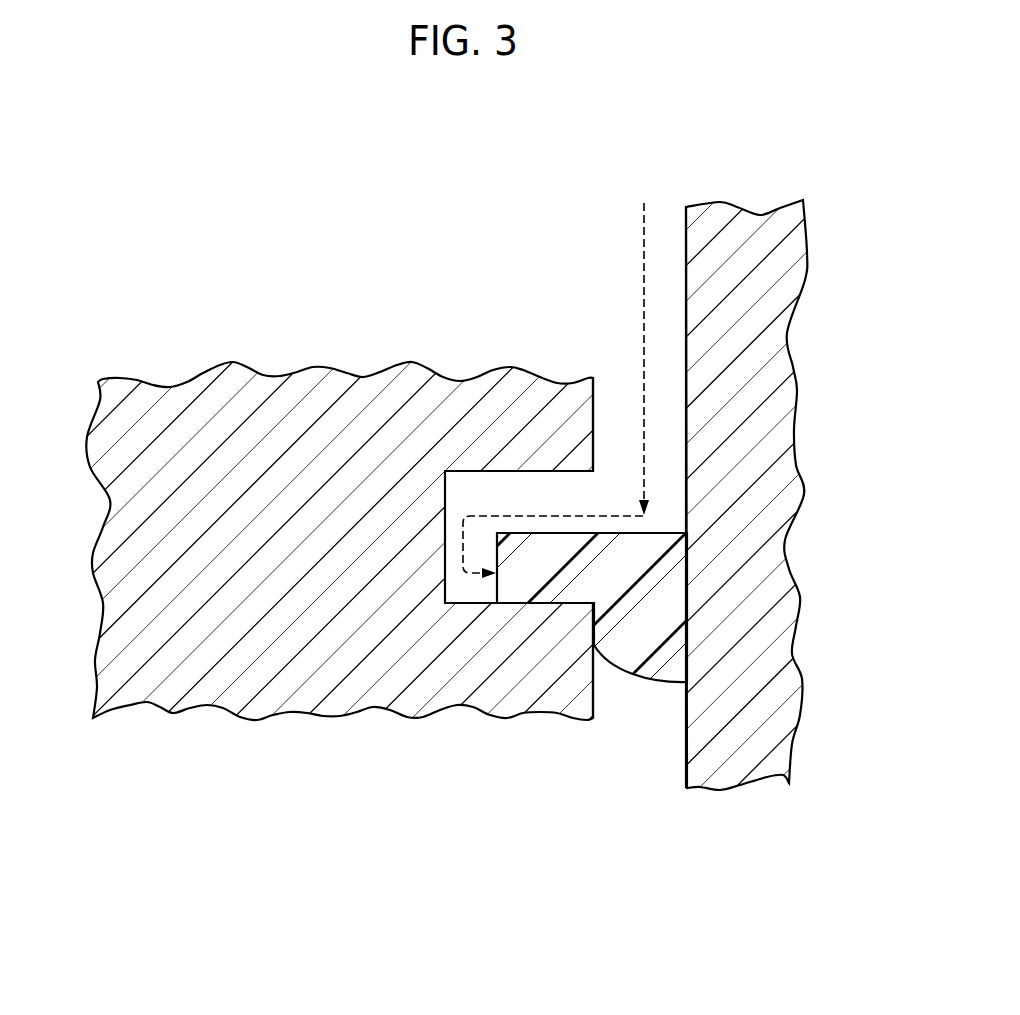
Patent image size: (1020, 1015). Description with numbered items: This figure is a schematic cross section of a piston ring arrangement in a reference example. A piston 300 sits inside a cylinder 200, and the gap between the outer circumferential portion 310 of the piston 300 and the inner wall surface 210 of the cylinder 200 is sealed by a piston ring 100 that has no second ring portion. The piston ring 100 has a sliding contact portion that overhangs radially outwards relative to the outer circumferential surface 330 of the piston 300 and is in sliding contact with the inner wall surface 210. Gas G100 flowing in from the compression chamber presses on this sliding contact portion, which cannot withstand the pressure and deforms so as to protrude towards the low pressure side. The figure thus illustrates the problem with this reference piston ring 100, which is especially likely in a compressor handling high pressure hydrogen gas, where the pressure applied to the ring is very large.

The piston ring 100 is at (602, 571).
The gas G100 is at (643, 224).
The cylinder 200 is at (768, 390).
The inner wall surface 210 is at (686, 276).
The piston 300 is at (118, 557).
The outer circumferential portion 310 is at (612, 400).
The outer circumferential surface 330 is at (598, 692).